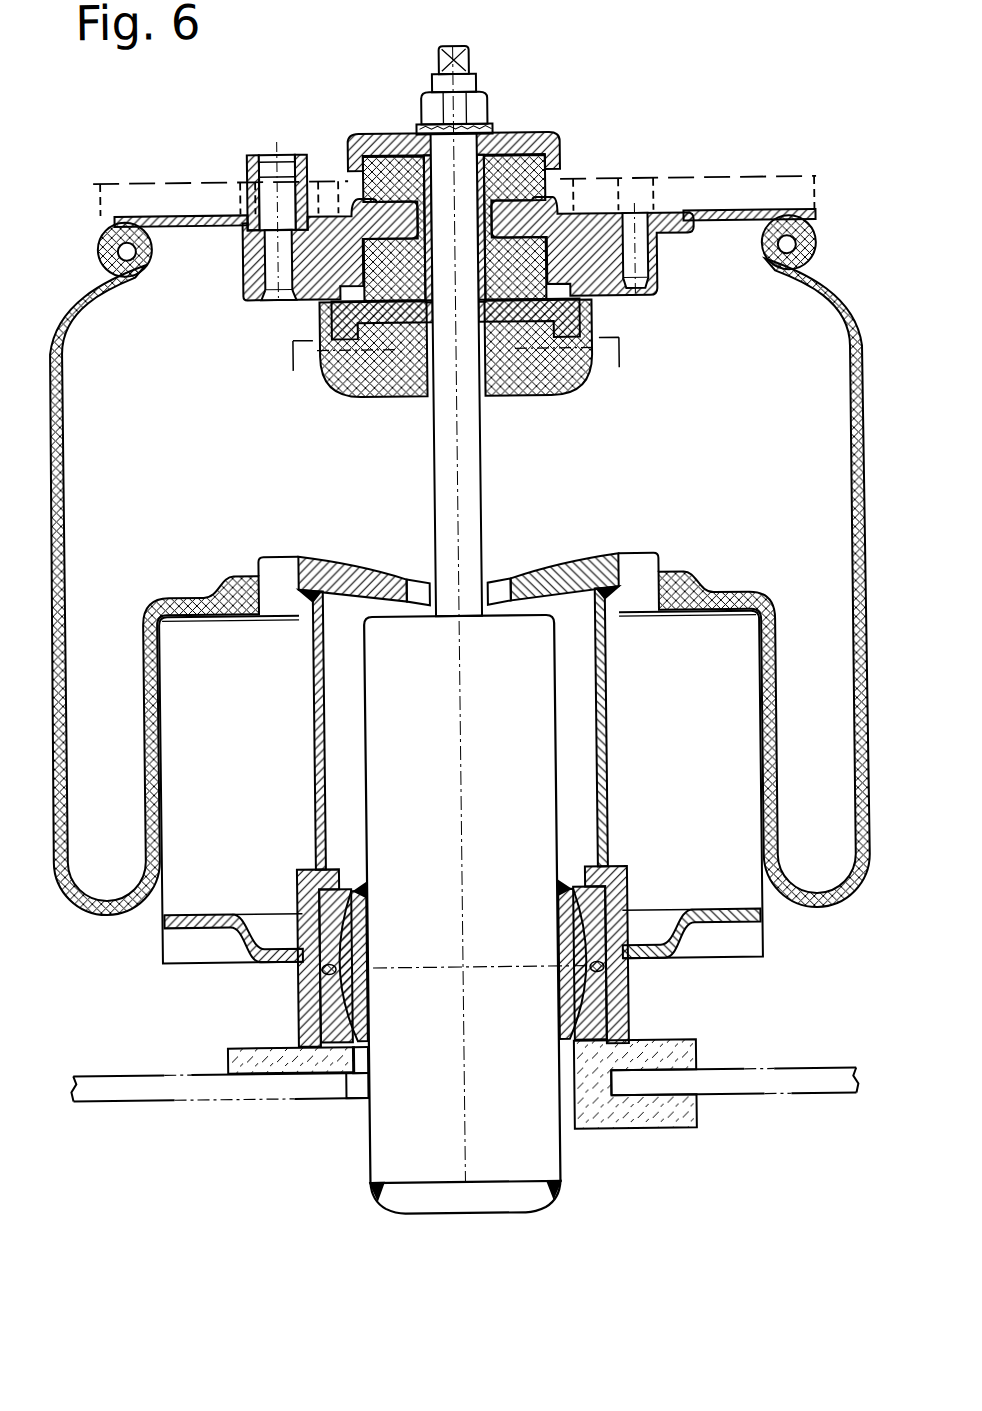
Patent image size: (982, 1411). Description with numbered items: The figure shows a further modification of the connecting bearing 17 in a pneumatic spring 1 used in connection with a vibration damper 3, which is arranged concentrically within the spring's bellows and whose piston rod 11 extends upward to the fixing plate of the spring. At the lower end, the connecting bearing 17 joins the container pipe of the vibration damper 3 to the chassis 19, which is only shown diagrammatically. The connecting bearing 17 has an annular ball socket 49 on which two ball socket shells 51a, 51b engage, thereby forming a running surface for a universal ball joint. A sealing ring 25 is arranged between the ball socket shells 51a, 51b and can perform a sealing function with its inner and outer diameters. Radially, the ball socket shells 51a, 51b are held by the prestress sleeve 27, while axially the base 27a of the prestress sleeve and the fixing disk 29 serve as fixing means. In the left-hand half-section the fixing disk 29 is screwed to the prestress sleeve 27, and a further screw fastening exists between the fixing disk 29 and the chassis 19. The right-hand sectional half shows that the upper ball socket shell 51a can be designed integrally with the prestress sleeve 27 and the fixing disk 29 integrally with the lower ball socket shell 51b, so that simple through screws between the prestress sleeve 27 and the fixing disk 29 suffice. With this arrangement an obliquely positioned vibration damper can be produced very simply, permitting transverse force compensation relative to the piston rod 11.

The pneumatic spring 1 is at (139, 1197).
The vibration damper 3 is at (612, 1204).
The piston rod 11 is at (469, 511).
The connecting bearing 17 is at (333, 1119).
The chassis 19 is at (95, 1087).
The sealing ring 25 is at (317, 971).
The prestress sleeve 27 is at (615, 1010).
The base 27a is at (323, 868).
The fixing disk 29 is at (249, 1071).
The annular ball socket 49 is at (347, 998).
The upper ball socket shell 51a is at (330, 909).
The lower ball socket shell 51b is at (306, 1033).